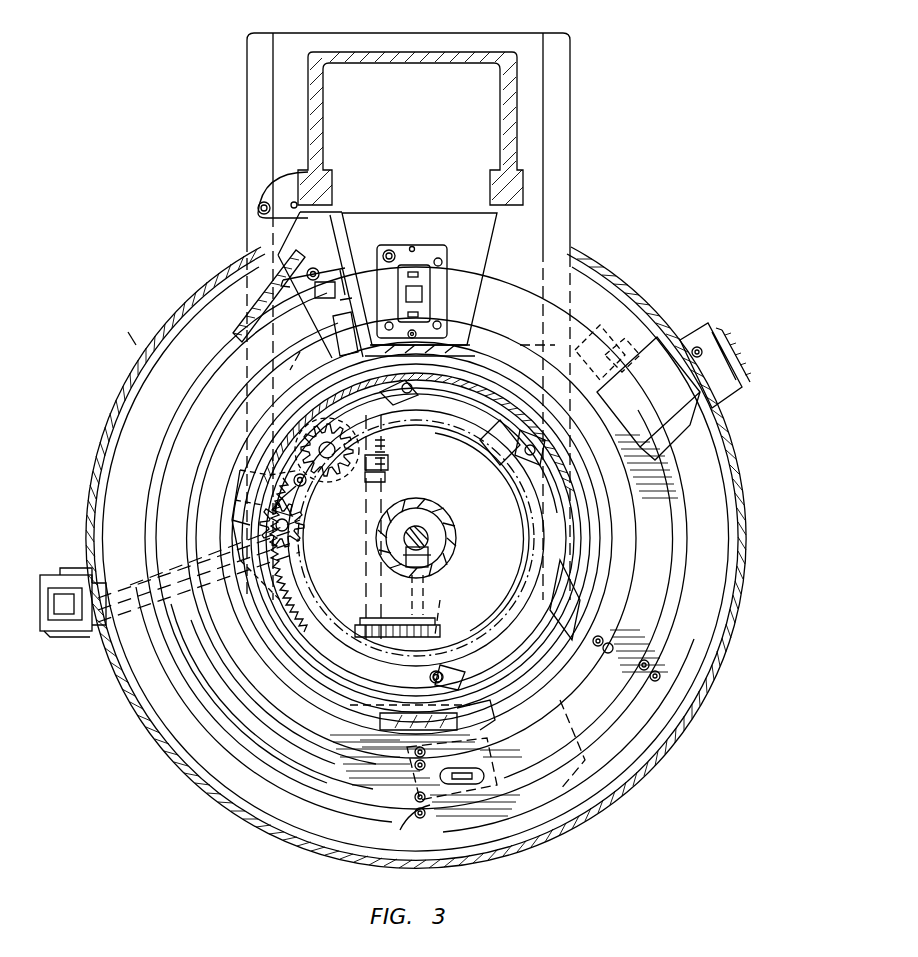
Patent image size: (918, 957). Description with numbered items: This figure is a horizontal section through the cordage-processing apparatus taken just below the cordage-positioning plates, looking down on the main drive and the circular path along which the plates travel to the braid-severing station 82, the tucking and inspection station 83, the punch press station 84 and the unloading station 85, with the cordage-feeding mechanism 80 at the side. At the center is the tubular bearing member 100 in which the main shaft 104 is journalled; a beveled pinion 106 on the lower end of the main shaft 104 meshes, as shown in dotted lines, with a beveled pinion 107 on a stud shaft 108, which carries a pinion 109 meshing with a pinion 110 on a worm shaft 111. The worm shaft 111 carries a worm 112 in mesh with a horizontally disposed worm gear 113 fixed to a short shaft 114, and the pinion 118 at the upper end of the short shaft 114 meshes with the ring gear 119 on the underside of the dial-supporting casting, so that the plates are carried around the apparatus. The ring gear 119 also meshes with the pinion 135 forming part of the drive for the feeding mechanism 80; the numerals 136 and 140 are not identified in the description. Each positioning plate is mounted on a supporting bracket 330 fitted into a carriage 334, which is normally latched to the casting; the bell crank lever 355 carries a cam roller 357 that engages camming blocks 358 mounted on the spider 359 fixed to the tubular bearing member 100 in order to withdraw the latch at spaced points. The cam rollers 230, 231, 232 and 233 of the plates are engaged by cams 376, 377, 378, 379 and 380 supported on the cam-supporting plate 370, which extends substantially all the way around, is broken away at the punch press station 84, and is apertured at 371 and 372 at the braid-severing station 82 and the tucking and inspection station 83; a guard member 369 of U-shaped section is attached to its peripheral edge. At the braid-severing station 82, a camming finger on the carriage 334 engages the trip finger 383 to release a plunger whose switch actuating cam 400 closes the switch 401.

The feeding mechanism 80 is at (100, 650).
The braid-severing station 82 is at (438, 879).
The tucking and inspection station 83 is at (686, 322).
The punch press station 84 is at (540, 199).
The unloading station 85 is at (135, 338).
The tubular bearing member 100 is at (445, 517).
The main shaft 104 is at (425, 530).
The beveled pinion 106 is at (435, 540).
The beveled pinion 107 is at (440, 556).
The stud shaft 108 is at (425, 588).
The pinion 109 is at (438, 620).
The pinion 110 is at (364, 600).
The worm shaft 111 is at (368, 584).
The worm 112 is at (385, 447).
The worm gear 113 is at (385, 463).
The short shaft 114 is at (385, 478).
The pinion 118 is at (318, 488).
The ring gear 119 is at (318, 509).
The pinion 135 is at (318, 524).
The ring gear segment 136 is at (316, 540).
The bracket 140 is at (314, 556).
The cam roller 230 is at (658, 672).
The cam roller 231 is at (600, 636).
The cam roller 232 is at (648, 662).
The cam roller 233 is at (612, 645).
The supporting bracket 330 is at (555, 494).
The carriage 334 is at (590, 500).
The bell crank lever 355 is at (450, 655).
The cam roller 357 is at (428, 677).
The camming block 358 is at (415, 392).
The spider 359 is at (485, 445).
The guard member 369 is at (230, 813).
The cam-supporting plate 370 is at (222, 783).
The aperture 371 is at (470, 783).
The aperture 372 is at (660, 430).
The cam 376 is at (220, 748).
The cam 377 is at (230, 712).
The cam 378 is at (253, 665).
The cam 379 is at (243, 405).
The cam 380 is at (237, 340).
The trip finger 383 is at (560, 355).
The switch actuating cam 400 is at (600, 330).
The switch 401 is at (620, 348).